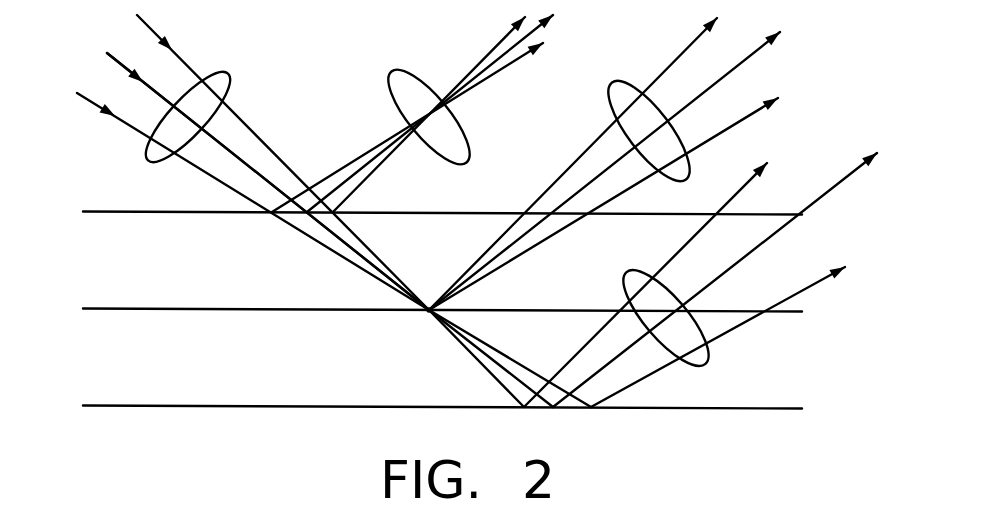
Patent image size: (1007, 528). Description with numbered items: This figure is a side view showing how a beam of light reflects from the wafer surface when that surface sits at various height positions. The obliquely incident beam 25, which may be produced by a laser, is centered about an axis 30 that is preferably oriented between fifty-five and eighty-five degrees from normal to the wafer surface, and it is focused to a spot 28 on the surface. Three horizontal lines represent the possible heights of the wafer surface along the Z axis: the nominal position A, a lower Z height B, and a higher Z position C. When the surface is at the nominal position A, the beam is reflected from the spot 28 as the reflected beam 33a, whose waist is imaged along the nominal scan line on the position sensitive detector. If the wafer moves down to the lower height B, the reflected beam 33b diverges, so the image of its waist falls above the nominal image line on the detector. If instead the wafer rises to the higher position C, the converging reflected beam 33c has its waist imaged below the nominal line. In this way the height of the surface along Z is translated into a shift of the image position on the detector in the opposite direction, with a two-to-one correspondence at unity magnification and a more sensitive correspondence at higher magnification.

The incident beam of light 25 is at (228, 73).
The spot 28 is at (429, 307).
The incident beam axis 30 is at (333, 240).
The reflected beam at nominal position 33a is at (612, 83).
The diverging reflected beam 33b is at (628, 273).
The converging reflected beam 33c is at (392, 70).
The nominal position A is at (112, 308).
The lower Z height B is at (112, 405).
The higher Z position C is at (112, 211).